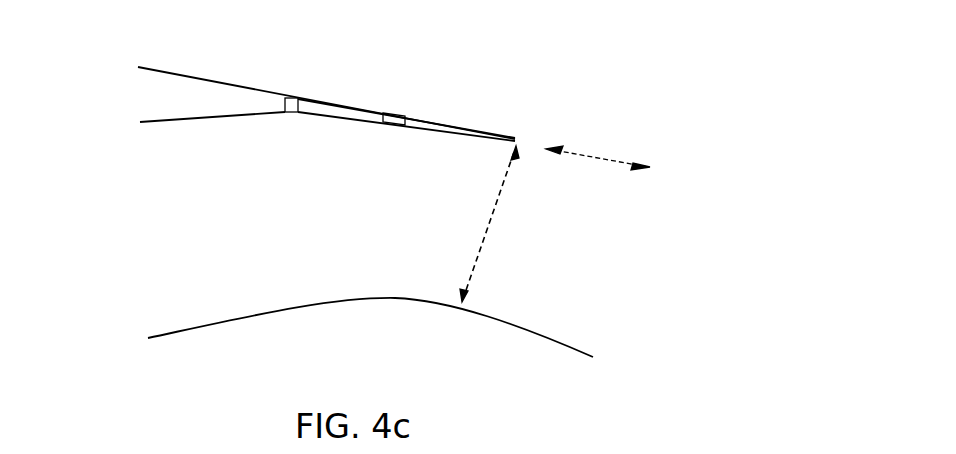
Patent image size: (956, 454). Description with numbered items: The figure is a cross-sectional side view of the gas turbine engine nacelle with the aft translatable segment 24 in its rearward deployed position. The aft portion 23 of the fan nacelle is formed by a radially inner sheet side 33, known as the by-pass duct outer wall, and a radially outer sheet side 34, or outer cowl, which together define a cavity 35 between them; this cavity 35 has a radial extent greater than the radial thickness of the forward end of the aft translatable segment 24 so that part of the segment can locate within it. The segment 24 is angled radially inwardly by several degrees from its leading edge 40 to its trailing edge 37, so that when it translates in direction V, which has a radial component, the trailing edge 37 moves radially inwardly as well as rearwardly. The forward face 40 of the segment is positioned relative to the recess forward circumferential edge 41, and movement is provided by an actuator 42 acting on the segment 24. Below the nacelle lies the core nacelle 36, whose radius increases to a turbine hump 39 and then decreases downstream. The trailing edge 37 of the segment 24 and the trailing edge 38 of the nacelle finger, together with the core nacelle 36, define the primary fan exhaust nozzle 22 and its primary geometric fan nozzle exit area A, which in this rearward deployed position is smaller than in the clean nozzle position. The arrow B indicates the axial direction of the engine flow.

The primary fan exhaust nozzle 22 is at (551, 189).
The aft portion 23 is at (148, 98).
The aft translatable segment 24 is at (460, 128).
The radially inner sheet side 33 is at (202, 118).
The radially outer sheet side 34 is at (313, 92).
The cavity 35 is at (207, 88).
The core nacelle 36 is at (230, 320).
The trailing edge 37 is at (518, 142).
The trailing edge of the nacelle finger 38 is at (493, 130).
The turbine hump 39 is at (388, 304).
The leading edge 40 is at (373, 122).
The recess forward circumferential edge 41 is at (422, 112).
The actuator 42 is at (293, 114).
The primary geometric fan nozzle exit area A is at (493, 218).
The direction B is at (337, 220).
The direction of movement V is at (598, 149).